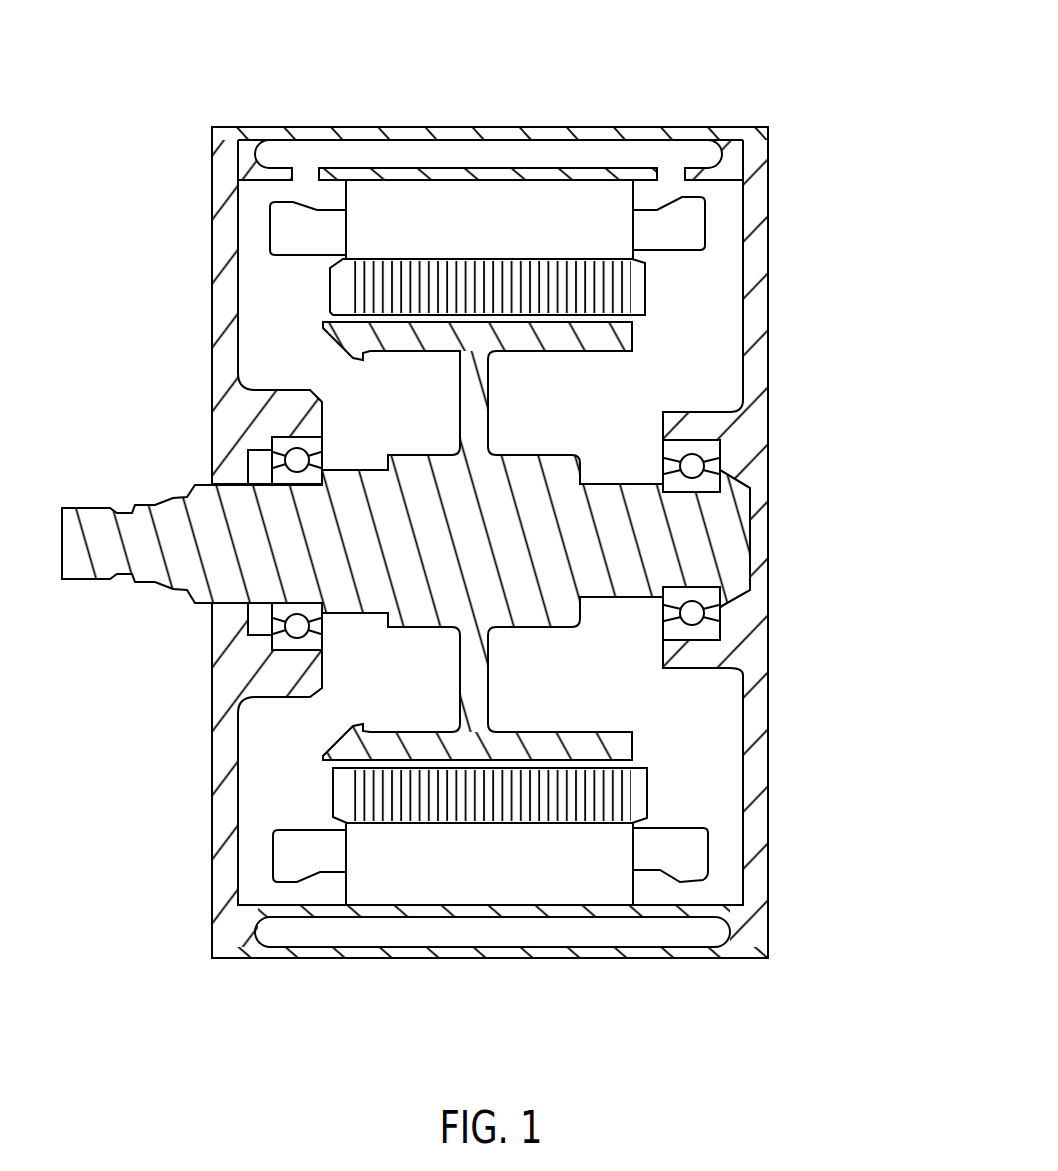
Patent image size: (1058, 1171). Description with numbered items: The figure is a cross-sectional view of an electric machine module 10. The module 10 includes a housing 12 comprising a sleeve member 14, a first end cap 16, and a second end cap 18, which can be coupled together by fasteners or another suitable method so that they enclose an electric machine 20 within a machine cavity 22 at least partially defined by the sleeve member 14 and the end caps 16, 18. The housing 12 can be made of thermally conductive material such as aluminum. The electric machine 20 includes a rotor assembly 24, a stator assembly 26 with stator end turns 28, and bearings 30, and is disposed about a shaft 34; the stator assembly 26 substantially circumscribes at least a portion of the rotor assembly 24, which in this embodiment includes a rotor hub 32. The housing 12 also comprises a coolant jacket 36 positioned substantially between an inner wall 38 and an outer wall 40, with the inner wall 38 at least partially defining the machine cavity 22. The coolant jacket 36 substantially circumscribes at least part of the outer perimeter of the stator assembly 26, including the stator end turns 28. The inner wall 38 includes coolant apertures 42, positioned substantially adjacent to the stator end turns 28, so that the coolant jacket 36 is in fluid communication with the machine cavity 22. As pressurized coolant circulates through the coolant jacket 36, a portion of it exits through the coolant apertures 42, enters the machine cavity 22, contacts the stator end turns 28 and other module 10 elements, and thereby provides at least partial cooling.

The electric machine module 10 is at (739, 46).
The housing 12 is at (754, 127).
The sleeve member 14 is at (345, 126).
The first end cap 16 is at (213, 173).
The second end cap 18 is at (770, 174).
The electric machine 20 is at (295, 315).
The machine cavity 22 is at (660, 319).
The rotor assembly 24 is at (620, 286).
The stator assembly 26 is at (550, 880).
The stator end turns 28 is at (288, 866).
The bearings 30 is at (297, 460).
The rotor hub 32 is at (488, 384).
The shaft 34 is at (73, 515).
The coolant jacket 36 is at (503, 140).
The inner wall 38 is at (483, 197).
The outer wall 40 is at (600, 126).
The coolant apertures 42 is at (305, 172).